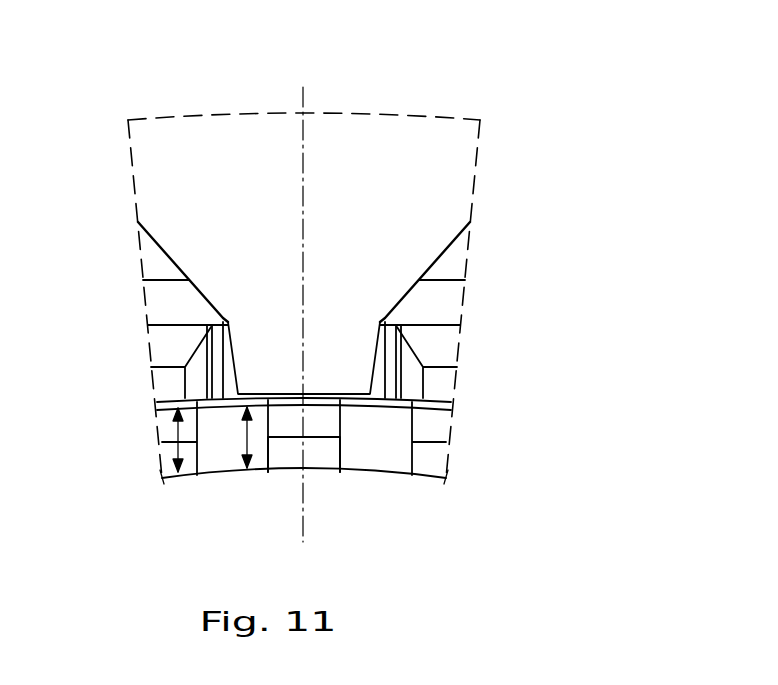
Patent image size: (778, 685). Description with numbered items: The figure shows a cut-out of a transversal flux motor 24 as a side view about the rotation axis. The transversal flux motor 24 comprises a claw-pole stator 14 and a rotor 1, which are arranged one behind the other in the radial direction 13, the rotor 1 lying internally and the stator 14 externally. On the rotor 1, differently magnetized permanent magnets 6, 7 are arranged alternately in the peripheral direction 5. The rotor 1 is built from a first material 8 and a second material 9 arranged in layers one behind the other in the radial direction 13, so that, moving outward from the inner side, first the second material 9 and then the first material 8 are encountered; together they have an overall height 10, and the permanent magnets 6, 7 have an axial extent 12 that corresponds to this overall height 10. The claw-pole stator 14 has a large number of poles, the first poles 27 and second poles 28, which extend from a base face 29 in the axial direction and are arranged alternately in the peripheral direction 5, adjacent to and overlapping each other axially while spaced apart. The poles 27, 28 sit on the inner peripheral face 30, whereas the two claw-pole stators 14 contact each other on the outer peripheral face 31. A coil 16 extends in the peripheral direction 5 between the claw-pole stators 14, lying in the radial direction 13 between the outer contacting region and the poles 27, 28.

The rotor 1 is at (468, 477).
The peripheral direction 5 is at (142, 108).
The permanent magnet 6 is at (215, 458).
The permanent magnet 7 is at (382, 455).
The first material 8 is at (288, 425).
The second material 9 is at (317, 463).
The overall height 10 is at (163, 450).
The extent 12 is at (246, 425).
The radial direction 13 is at (321, 302).
The claw-pole stator 14 is at (496, 248).
The coil 16 is at (153, 260).
The transversal flux motor 24 is at (526, 133).
The first pole 27 is at (358, 357).
The second pole 28 is at (165, 383).
The base face 29 is at (257, 345).
The inner peripheral face 30 is at (447, 403).
The outer peripheral face 31 is at (430, 118).